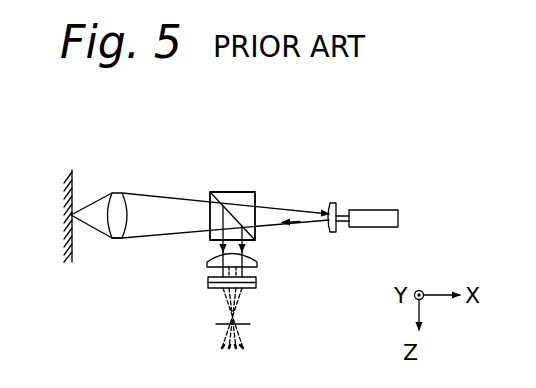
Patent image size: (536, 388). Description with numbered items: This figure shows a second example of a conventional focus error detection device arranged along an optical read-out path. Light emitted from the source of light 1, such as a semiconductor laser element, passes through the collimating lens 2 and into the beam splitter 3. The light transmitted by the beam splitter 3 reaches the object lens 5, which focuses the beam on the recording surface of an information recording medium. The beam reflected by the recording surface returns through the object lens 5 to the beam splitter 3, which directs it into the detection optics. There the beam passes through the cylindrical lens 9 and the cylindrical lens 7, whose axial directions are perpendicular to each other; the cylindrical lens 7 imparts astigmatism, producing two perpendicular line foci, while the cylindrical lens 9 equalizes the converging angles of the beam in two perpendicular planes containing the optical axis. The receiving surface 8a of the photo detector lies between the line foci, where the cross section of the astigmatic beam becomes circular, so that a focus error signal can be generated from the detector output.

The source of light 1 is at (389, 211).
The collimating lens 2 is at (331, 203).
The beam splitter 3 is at (250, 192).
The object lens 5 is at (118, 241).
The cylindrical lens 7 is at (258, 282).
The receiving surface 8a is at (250, 324).
The cylindrical lens 9 is at (208, 263).